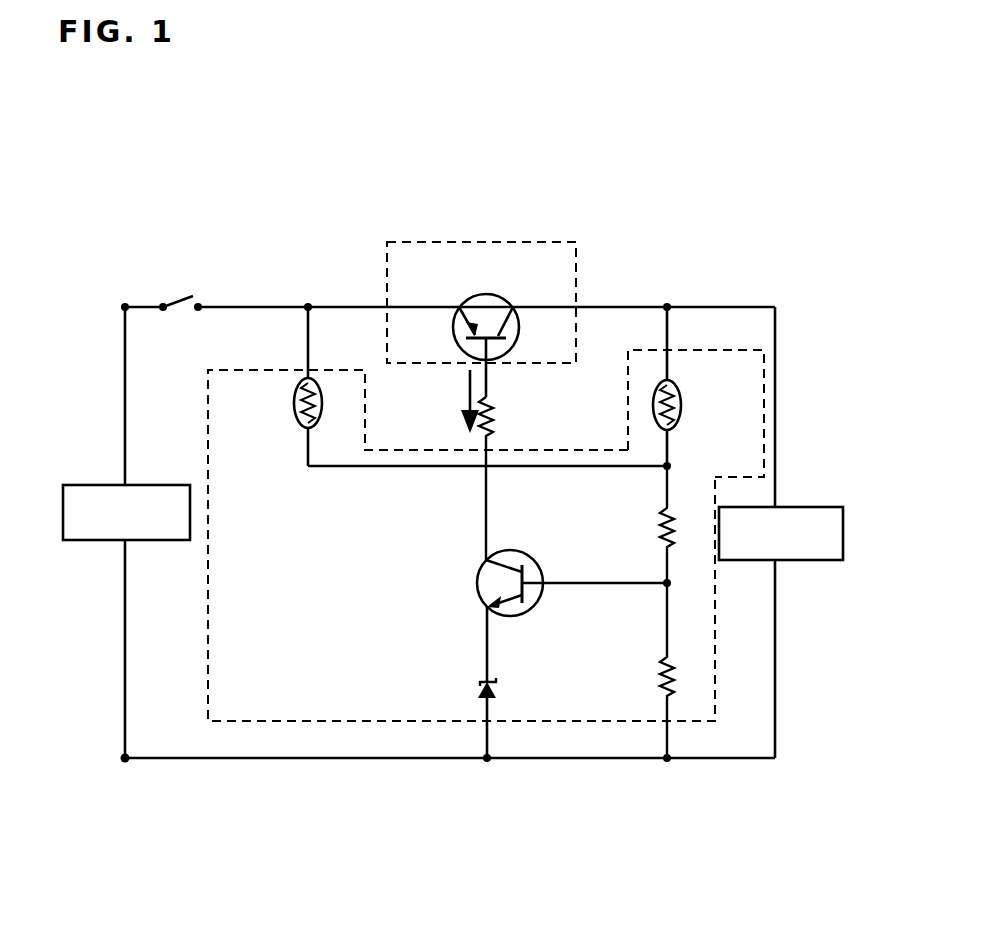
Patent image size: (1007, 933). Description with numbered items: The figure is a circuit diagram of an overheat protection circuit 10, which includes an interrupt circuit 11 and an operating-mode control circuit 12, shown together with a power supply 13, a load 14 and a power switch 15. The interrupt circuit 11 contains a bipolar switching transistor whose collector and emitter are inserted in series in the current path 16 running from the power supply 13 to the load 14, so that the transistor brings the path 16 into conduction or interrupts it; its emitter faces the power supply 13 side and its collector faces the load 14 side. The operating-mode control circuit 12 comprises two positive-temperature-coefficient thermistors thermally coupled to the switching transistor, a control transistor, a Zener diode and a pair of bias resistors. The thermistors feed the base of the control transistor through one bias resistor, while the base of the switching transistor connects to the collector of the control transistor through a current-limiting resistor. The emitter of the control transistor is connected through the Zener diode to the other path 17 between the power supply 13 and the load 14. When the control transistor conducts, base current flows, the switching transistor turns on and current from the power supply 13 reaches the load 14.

The overheat protection circuit 10 is at (346, 220).
The interrupt circuit 11 is at (507, 240).
The operating-mode control circuit 12 is at (710, 345).
The power supply 13 is at (104, 541).
The load 14 is at (793, 562).
The power switch 15 is at (180, 299).
The current path 16 is at (614, 306).
The other path 17 is at (348, 760).